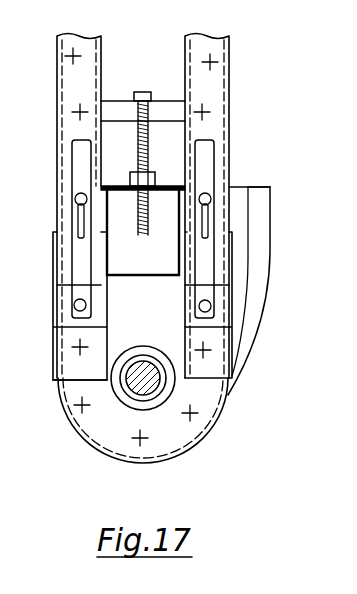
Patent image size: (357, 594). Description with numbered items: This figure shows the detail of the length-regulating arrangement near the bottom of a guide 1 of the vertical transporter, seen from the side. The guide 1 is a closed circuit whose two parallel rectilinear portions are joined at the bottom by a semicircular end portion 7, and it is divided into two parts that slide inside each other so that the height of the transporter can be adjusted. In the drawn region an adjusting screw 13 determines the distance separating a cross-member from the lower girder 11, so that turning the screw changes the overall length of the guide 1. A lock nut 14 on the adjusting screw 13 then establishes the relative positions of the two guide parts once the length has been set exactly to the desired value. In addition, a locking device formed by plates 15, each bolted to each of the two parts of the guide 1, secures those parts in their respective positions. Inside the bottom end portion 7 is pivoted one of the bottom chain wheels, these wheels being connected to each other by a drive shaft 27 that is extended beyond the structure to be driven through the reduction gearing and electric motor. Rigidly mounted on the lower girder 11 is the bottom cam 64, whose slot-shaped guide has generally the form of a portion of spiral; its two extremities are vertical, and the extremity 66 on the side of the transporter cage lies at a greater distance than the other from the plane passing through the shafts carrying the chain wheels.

The guide 1 is at (101, 48).
The bottom end portion 7 is at (113, 444).
The lower girder 11 is at (143, 232).
The adjusting screw 13 is at (147, 150).
The lock nut 14 is at (148, 181).
The plate 15 is at (77, 157).
The drive shaft 27 is at (143, 370).
The bottom cam 64 is at (245, 265).
The extremity of the guide slot 66 is at (259, 184).